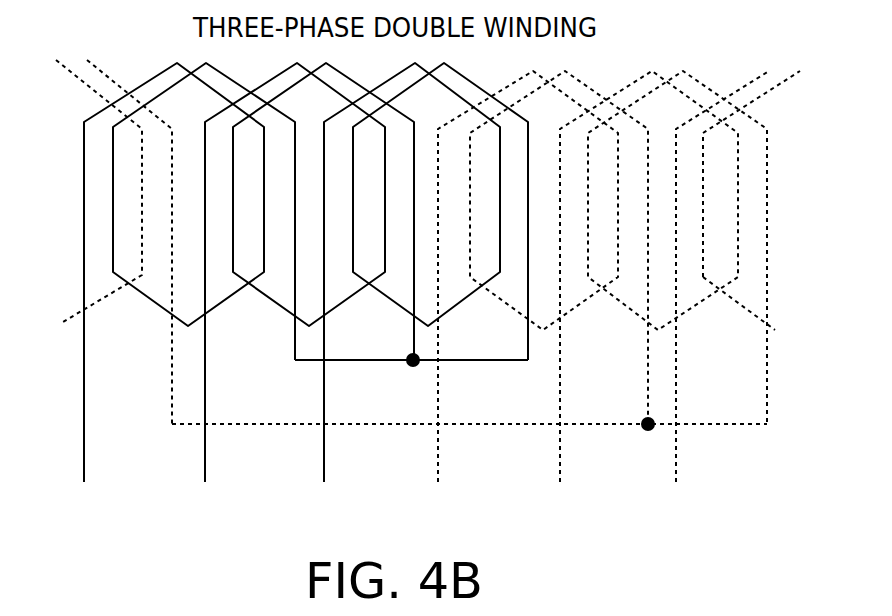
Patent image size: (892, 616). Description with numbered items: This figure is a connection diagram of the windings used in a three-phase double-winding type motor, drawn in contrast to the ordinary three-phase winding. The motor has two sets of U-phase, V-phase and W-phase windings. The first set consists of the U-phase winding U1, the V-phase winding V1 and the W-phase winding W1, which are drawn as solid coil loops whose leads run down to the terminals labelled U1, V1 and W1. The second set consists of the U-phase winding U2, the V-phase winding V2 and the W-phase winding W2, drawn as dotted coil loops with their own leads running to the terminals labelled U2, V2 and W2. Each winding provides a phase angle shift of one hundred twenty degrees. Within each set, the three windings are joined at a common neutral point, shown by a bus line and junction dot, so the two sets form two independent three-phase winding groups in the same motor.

The U-phase winding of the first winding set U1 is at (184, 288).
The V-phase winding of the first winding set V1 is at (304, 288).
The W-phase winding of the first winding set W1 is at (420, 288).
The U-phase winding of the second winding set U2 is at (535, 292).
The V-phase winding of the second winding set V2 is at (654, 292).
The W-phase winding of the second winding set W2 is at (428, 287).